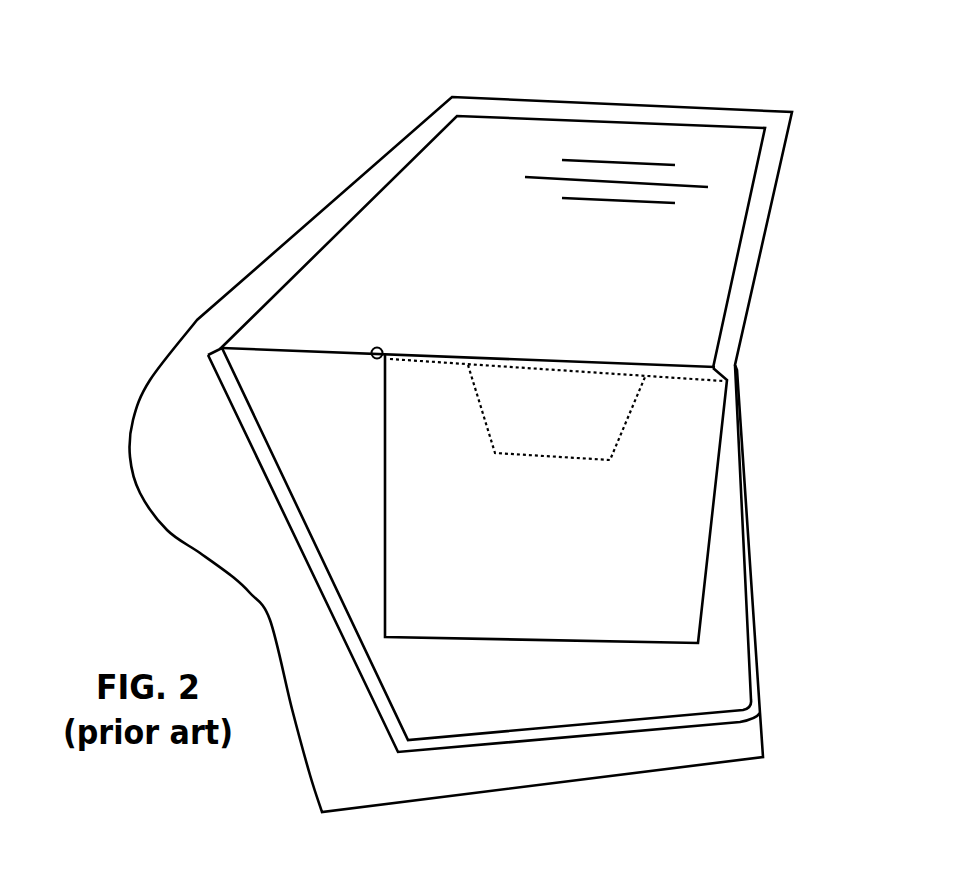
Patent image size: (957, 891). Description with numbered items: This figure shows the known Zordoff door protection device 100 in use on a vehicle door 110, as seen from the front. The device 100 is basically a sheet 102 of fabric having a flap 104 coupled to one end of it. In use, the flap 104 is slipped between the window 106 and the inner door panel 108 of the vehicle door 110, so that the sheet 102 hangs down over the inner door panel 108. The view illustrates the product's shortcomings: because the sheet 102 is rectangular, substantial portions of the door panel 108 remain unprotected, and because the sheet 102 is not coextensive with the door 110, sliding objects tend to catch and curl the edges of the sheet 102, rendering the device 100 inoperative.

The device 100 is at (435, 352).
The sheet 102 is at (685, 447).
The flap 104 is at (550, 398).
The window 106 is at (427, 177).
The inner door panel 108 is at (290, 396).
The vehicle door 110 is at (655, 105).